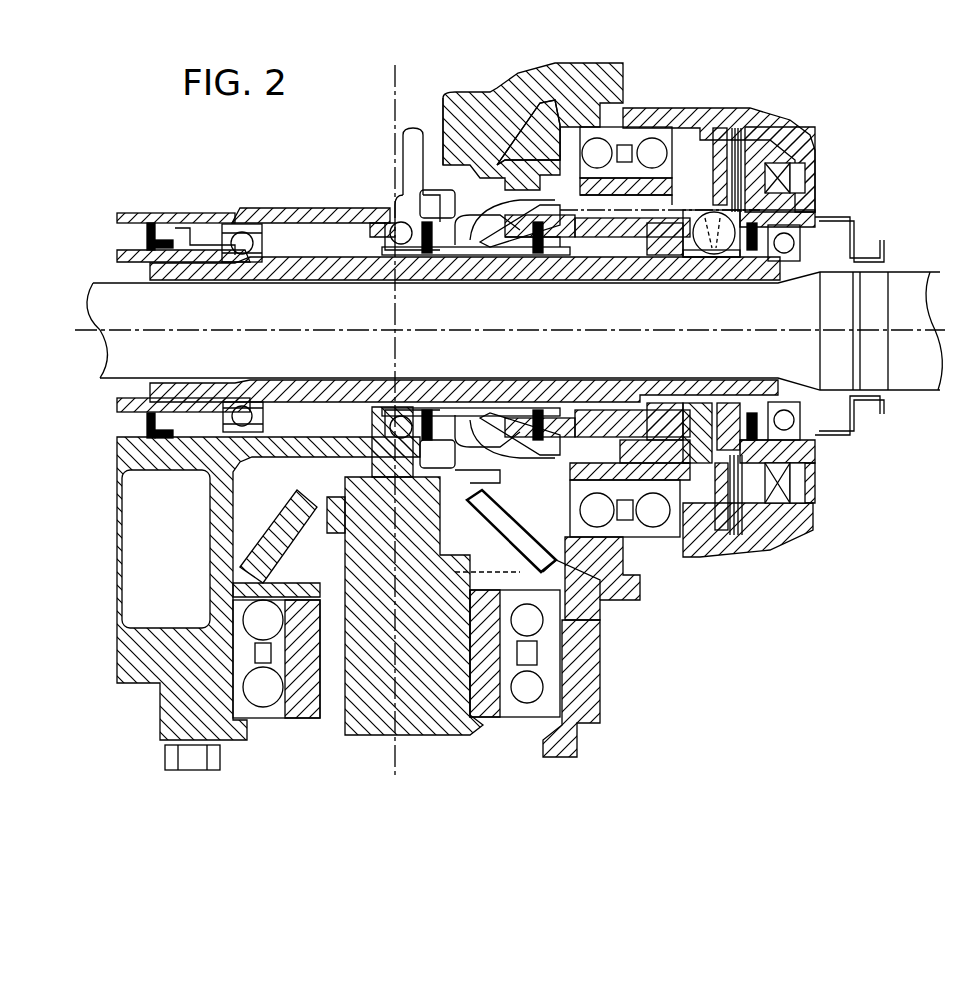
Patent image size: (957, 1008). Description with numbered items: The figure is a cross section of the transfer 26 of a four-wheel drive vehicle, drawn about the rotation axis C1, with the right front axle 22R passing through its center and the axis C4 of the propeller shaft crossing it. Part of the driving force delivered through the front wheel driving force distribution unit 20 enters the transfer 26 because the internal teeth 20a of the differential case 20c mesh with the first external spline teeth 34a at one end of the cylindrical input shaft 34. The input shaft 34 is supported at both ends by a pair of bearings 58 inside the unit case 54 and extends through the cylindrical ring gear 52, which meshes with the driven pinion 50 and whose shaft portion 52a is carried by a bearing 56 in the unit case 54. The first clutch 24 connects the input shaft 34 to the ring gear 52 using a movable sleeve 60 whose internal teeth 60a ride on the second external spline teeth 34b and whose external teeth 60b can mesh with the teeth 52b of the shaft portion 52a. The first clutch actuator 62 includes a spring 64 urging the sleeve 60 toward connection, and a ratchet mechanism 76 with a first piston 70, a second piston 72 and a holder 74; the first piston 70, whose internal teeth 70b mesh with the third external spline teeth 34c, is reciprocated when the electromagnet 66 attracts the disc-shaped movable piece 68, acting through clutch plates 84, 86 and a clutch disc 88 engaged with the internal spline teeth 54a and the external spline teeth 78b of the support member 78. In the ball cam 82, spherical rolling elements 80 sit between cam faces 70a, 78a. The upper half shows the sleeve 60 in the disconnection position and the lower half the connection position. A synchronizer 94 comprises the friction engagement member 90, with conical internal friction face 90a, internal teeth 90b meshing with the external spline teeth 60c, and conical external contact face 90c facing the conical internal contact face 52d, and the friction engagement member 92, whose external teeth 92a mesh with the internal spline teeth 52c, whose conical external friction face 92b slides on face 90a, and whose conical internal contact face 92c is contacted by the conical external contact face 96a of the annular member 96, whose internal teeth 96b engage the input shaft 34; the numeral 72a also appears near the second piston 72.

The front wheel driving force distribution unit 20 is at (802, 107).
The internal teeth 20a is at (140, 262).
The differential case 20c is at (148, 228).
The axle 22R is at (120, 375).
The first clutch 24 is at (405, 262).
The transfer 26 is at (660, 104).
The input shaft 34 is at (338, 280).
The first external spline teeth 34a is at (210, 255).
The second external spline teeth 34b is at (577, 255).
The third external spline teeth 34c is at (665, 240).
The driven pinion 50 is at (297, 543).
The ring gear 52 is at (500, 100).
The shaft portion 52a is at (594, 200).
The teeth 52b is at (442, 200).
The internal spline teeth 52c is at (636, 200).
The conical internal contact face 52d is at (505, 560).
The unit case 54 is at (333, 215).
The internal spline teeth 54a is at (712, 205).
The bearing 56 is at (645, 555).
The bearings 58 is at (242, 238).
The movable sleeve 60 is at (410, 198).
The internal teeth 60a is at (483, 407).
The external teeth 60b is at (425, 190).
The external spline teeth 60c is at (453, 240).
The first clutch actuator 62 is at (808, 170).
The spring 64 is at (350, 395).
The electromagnet 66 is at (795, 180).
The movable piece 68 is at (720, 505).
The first piston 70 is at (730, 397).
The cam face 70a is at (712, 255).
The internal teeth 70b is at (703, 400).
The second piston 72 is at (582, 440).
The ring portion 72a is at (592, 240).
The holder 74 is at (634, 412).
The ratchet mechanism 76 is at (561, 408).
The support member 78 is at (737, 397).
The cam face 78a is at (765, 255).
The external spline teeth 78b is at (807, 455).
The spherical rolling elements 80 is at (716, 258).
The ball cam 82 is at (710, 205).
The clutch plate 84 is at (723, 535).
The clutch plate 86 is at (745, 533).
The clutch disc 88 is at (806, 512).
The friction engagement member 90 is at (493, 448).
The conical internal friction face 90a is at (470, 195).
The internal teeth 90b is at (470, 205).
The conical external contact face 90c is at (528, 240).
The friction engagement member 92 is at (648, 540).
The external teeth 92a is at (528, 180).
The conical external friction face 92b is at (542, 225).
The conical internal contact face 92c is at (600, 603).
The synchronizer 94 is at (500, 455).
The annular member 96 is at (540, 408).
The conical external contact face 96a is at (518, 205).
The internal teeth 96b is at (522, 408).
The rotation axis C1 is at (172, 330).
The axis C4 is at (392, 92).